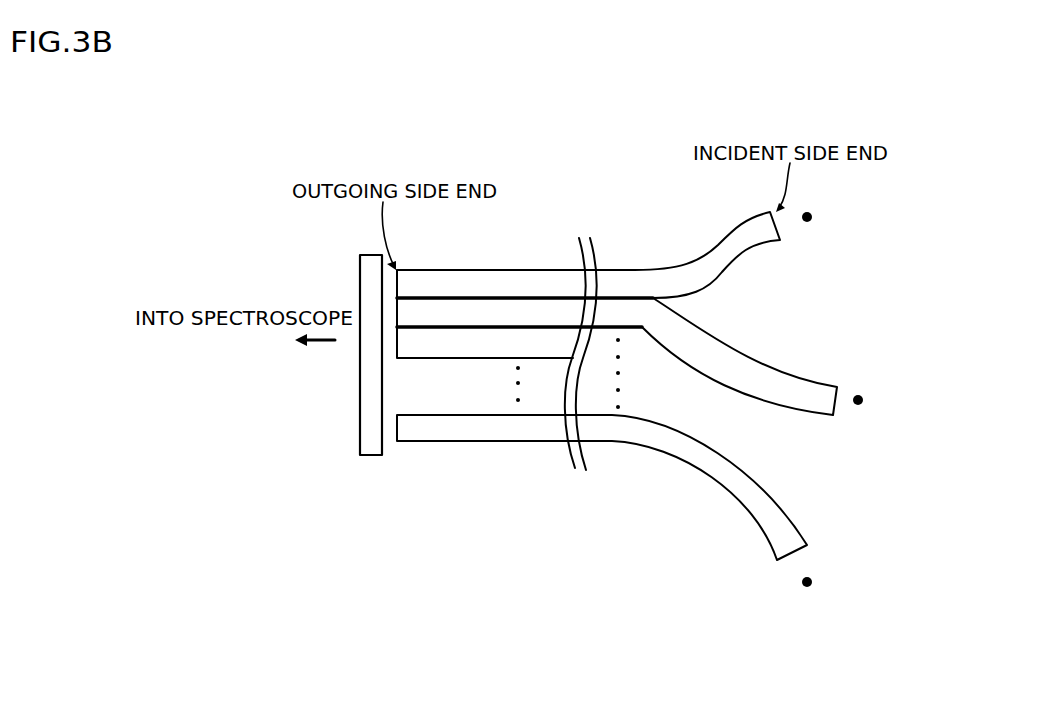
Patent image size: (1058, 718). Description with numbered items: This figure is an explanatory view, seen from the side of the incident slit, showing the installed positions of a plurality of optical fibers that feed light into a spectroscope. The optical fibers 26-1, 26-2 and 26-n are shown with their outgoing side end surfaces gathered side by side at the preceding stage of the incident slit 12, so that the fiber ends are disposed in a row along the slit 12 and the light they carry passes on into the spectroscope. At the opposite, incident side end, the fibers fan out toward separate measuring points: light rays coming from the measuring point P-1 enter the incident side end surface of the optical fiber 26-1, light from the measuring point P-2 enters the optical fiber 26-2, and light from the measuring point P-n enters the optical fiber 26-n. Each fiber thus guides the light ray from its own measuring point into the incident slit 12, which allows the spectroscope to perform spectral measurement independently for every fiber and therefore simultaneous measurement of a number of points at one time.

The incident slit 12 is at (390, 451).
The optical fiber 26-1 is at (672, 277).
The optical fiber 26-2 is at (813, 356).
The optical fiber 26-n is at (775, 525).
The measuring point P-1 is at (811, 214).
The measuring point P-2 is at (862, 397).
The measuring point P-n is at (811, 579).